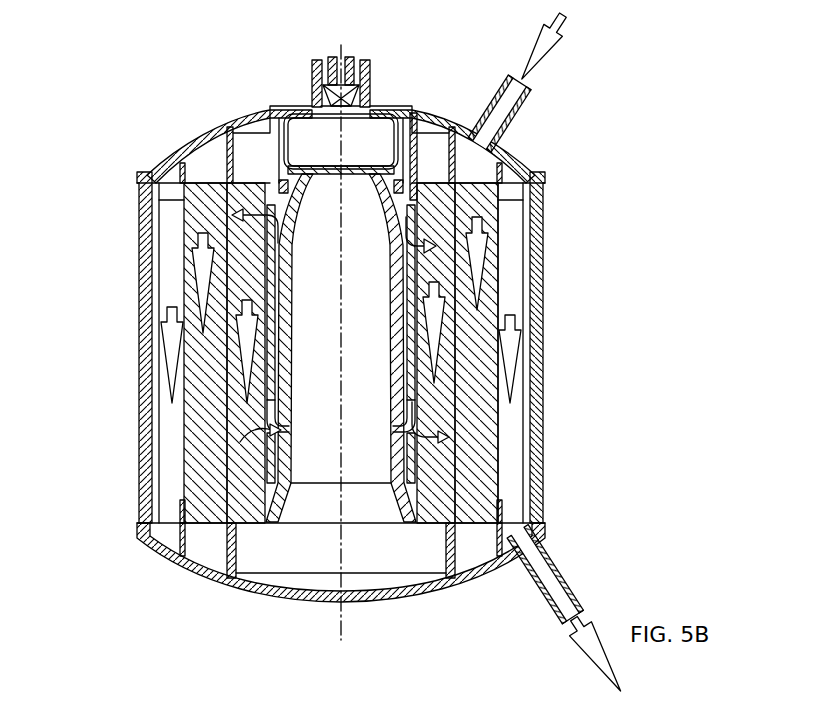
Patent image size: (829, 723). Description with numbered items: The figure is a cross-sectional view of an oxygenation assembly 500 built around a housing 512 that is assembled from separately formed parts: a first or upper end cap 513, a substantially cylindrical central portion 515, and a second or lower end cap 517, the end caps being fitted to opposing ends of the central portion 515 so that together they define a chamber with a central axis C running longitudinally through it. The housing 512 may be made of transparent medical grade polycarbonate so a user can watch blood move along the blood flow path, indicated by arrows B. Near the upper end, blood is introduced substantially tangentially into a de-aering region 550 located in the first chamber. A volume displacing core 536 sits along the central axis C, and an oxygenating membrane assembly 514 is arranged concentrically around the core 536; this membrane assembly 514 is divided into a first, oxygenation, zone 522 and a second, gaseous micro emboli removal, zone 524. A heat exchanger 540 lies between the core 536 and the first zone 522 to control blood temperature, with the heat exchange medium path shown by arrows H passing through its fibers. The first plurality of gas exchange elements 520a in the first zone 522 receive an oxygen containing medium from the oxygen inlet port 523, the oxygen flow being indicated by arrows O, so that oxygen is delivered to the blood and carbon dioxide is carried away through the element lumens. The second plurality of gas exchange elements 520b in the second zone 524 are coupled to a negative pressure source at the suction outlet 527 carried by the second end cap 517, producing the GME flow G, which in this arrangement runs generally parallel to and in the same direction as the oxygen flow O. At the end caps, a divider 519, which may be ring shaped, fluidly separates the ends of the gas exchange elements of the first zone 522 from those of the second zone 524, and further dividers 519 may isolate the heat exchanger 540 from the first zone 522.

The oxygenation assembly 500 is at (114, 79).
The first end cap 513 is at (234, 120).
The de-aering region 550 is at (368, 140).
The volume displacing core 536 is at (418, 122).
The oxygen inlet port 523 is at (522, 113).
The central portion 515 is at (140, 300).
The heat exchanger 540 is at (232, 228).
The housing 512 is at (549, 254).
The oxygenating membrane assembly 514 is at (490, 300).
The first zone 522 is at (200, 413).
The second zone 524 is at (176, 446).
The first plurality of gas exchange elements 520a is at (498, 473).
The second plurality of gas exchange elements 520b is at (512, 437).
The second end cap 517 is at (167, 553).
The divider 519 is at (218, 540).
The suction outlet 527 is at (565, 571).
The central axis C is at (333, 52).
The oxygen flow O is at (562, 39).
The blood flow path B is at (160, 183).
The GME flow G is at (166, 340).
The heat exchange medium flow path H is at (246, 330).